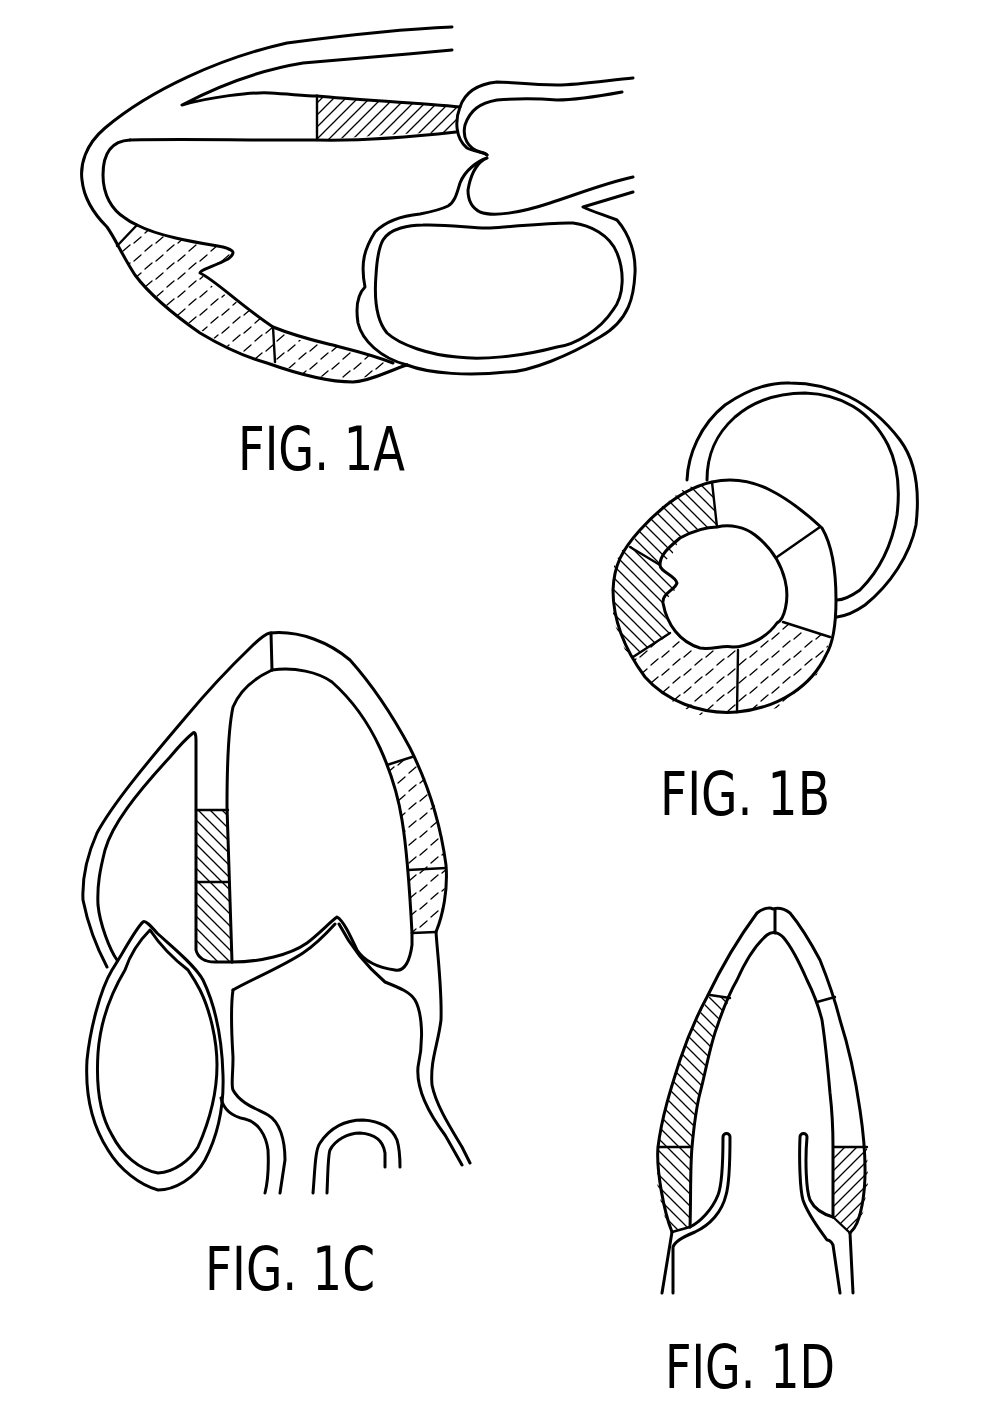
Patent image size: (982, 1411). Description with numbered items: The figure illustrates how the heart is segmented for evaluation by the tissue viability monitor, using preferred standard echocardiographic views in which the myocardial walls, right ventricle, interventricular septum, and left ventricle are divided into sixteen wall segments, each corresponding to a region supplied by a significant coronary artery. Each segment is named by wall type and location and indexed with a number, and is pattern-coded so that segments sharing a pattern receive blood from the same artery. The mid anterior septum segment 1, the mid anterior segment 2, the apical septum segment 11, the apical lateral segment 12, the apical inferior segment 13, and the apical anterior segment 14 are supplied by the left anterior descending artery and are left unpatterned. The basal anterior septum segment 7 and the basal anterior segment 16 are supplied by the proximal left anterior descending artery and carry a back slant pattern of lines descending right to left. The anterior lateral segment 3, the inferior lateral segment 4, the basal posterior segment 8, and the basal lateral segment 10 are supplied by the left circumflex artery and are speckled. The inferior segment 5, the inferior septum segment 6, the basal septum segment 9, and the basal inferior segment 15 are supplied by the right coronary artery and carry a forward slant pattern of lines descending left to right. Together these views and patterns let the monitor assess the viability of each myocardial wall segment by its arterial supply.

In FIG. 1A, the mid anterior septum segment 1 is at (263, 128).
In FIG. 1B, the mid anterior septum segment 1 is at (757, 484).
In FIG. 1B, the mid anterior segment 2 is at (827, 537).
In FIG. 1D, the mid anterior segment 2 is at (857, 1060).
In FIG. 1B, the anterior lateral segment 3 is at (800, 683).
In FIG. 1C, the anterior lateral segment 3 is at (440, 823).
In FIG. 1A, the inferior lateral segment 4 is at (193, 297).
In FIG. 1B, the inferior lateral segment 4 is at (673, 693).
In FIG. 1B, the inferior segment 5 is at (613, 584).
In FIG. 1D, the inferior segment 5 is at (683, 1060).
In FIG. 1B, the inferior septum segment 6 is at (670, 490).
In FIG. 1C, the inferior septum segment 6 is at (230, 853).
In FIG. 1A, the basal anterior septum segment 7 is at (403, 123).
In FIG. 1A, the basal posterior segment 8 is at (290, 334).
In FIG. 1C, the basal septum segment 9 is at (233, 920).
In FIG. 1C, the basal lateral segment 10 is at (447, 915).
In FIG. 1C, the apical septum segment 11 is at (230, 765).
In FIG. 1C, the apical lateral segment 12 is at (383, 695).
In FIG. 1D, the apical inferior segment 13 is at (732, 956).
In FIG. 1D, the apical anterior segment 14 is at (820, 950).
In FIG. 1D, the basal inferior segment 15 is at (660, 1187).
In FIG. 1D, the basal anterior segment 16 is at (870, 1190).